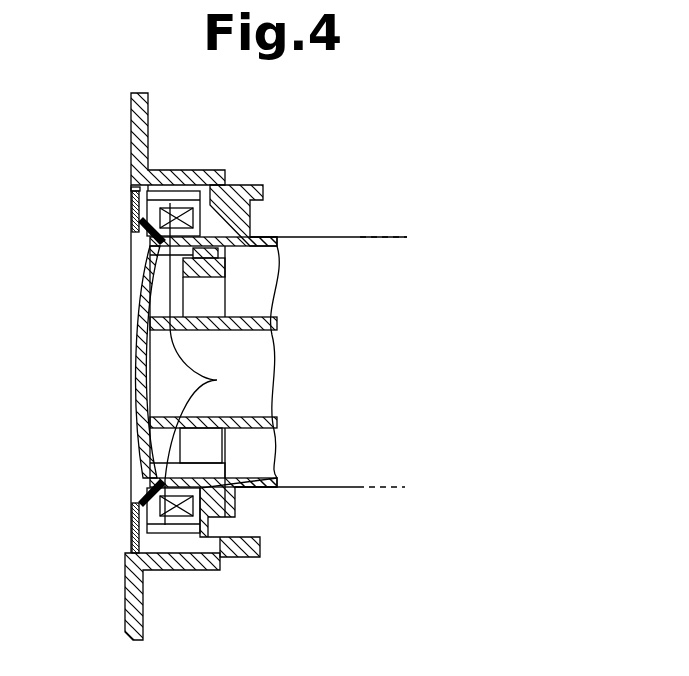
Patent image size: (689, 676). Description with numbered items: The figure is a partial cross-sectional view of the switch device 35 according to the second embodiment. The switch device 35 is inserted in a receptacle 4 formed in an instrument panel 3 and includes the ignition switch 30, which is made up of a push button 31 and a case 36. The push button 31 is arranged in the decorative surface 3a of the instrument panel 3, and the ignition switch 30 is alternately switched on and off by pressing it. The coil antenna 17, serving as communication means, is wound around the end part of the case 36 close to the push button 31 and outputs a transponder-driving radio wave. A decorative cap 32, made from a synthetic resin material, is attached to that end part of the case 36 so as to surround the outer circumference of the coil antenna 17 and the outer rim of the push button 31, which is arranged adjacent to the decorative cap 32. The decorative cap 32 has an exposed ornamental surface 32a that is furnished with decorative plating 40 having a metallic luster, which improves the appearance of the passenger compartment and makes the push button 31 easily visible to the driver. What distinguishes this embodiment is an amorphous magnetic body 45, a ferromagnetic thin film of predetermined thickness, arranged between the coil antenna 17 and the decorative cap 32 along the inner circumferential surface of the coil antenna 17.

The instrument panel 3 is at (158, 115).
The decorative surface 3a is at (130, 150).
The receptacle 4 is at (131, 192).
The ornamental surface 32a is at (130, 205).
The decorative plating 40 is at (130, 220).
The switch device 35 is at (358, 197).
The decorative cap 32 is at (240, 250).
The coil antenna 17 is at (217, 380).
The push button 31 is at (140, 455).
The amorphous magnetic body 45 is at (195, 482).
The case 36 is at (262, 488).
The ignition switch 30 is at (342, 493).